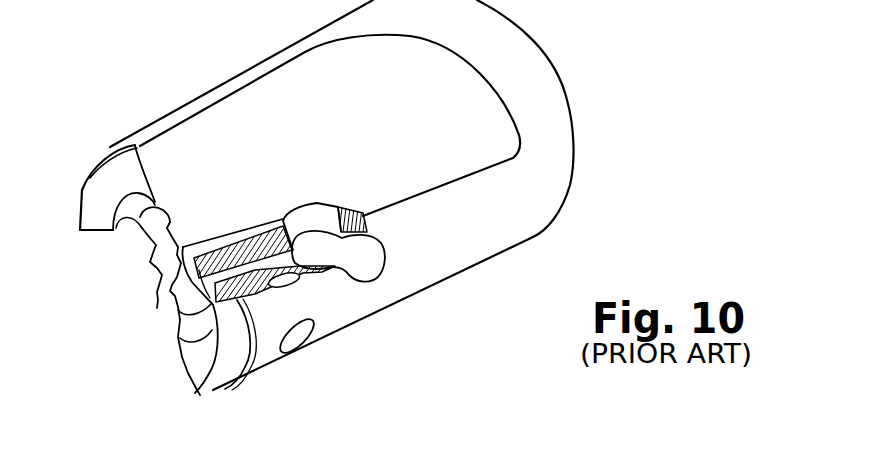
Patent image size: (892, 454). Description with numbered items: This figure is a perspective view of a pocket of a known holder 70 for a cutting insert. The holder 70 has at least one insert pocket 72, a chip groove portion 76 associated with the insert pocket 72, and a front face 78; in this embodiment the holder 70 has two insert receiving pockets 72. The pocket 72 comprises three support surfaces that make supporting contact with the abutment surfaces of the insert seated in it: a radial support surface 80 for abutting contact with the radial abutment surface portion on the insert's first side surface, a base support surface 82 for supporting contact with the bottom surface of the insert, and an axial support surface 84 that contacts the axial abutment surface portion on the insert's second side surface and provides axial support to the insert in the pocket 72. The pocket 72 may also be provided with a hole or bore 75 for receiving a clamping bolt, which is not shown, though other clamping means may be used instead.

The holder 70 is at (450, 233).
The insert pocket 72 is at (284, 200).
The hole or bore 75 is at (302, 279).
The chip groove portion 76 is at (332, 98).
The front face 78 is at (105, 188).
The radial support surface 80 is at (157, 308).
The base support surface 82 is at (215, 350).
The axial support surface 84 is at (352, 207).